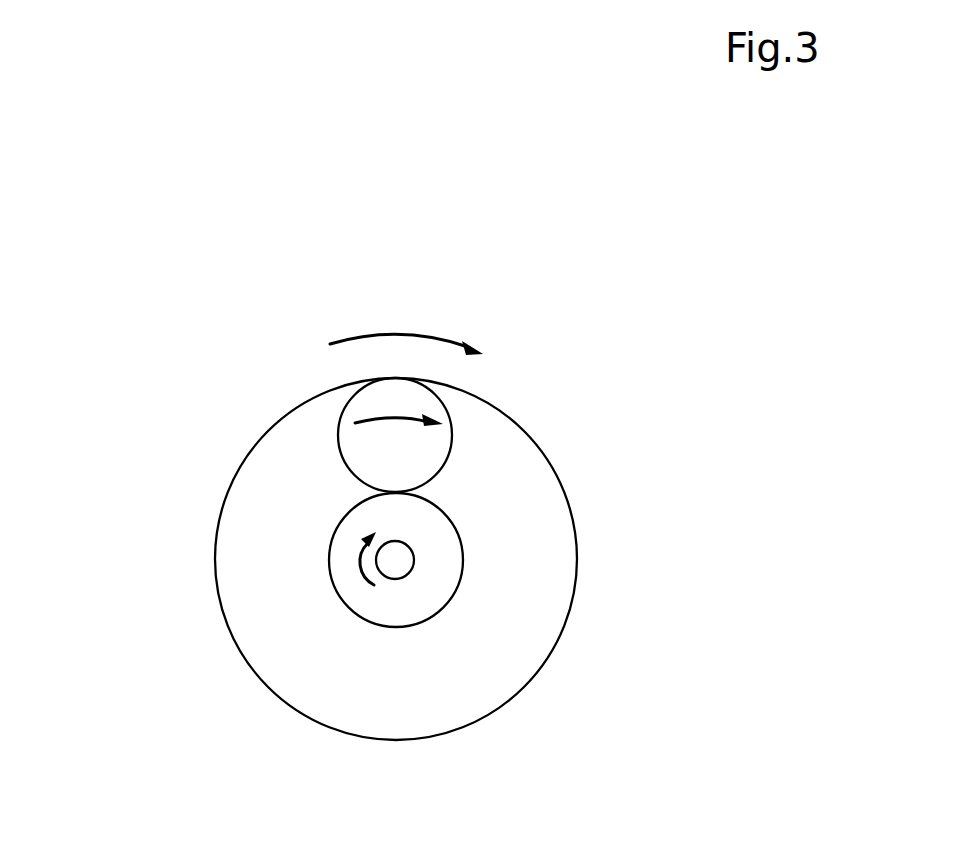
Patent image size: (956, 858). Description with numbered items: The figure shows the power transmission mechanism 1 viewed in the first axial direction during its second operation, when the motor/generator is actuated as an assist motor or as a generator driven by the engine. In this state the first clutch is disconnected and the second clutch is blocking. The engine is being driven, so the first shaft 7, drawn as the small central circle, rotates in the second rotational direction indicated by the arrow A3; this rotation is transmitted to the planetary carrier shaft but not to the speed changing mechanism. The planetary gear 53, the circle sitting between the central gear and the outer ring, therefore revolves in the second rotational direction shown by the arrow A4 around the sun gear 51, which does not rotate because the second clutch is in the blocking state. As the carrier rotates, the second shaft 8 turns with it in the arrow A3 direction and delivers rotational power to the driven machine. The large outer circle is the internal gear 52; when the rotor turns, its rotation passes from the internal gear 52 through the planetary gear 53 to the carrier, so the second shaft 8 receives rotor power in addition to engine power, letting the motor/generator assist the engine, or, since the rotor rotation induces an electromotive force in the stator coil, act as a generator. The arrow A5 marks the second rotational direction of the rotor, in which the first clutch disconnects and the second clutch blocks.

The power transmission mechanism 1 is at (103, 357).
The internal gear 52 is at (272, 424).
The planetary gear 53 is at (452, 452).
The sun gear 51 is at (462, 572).
The first shaft 7 is at (405, 677).
The second shaft 8 is at (397, 578).
The arrow A4 direction A4 is at (393, 417).
The arrow A5 direction A5 is at (415, 337).
The arrow A3 direction A3 is at (328, 562).